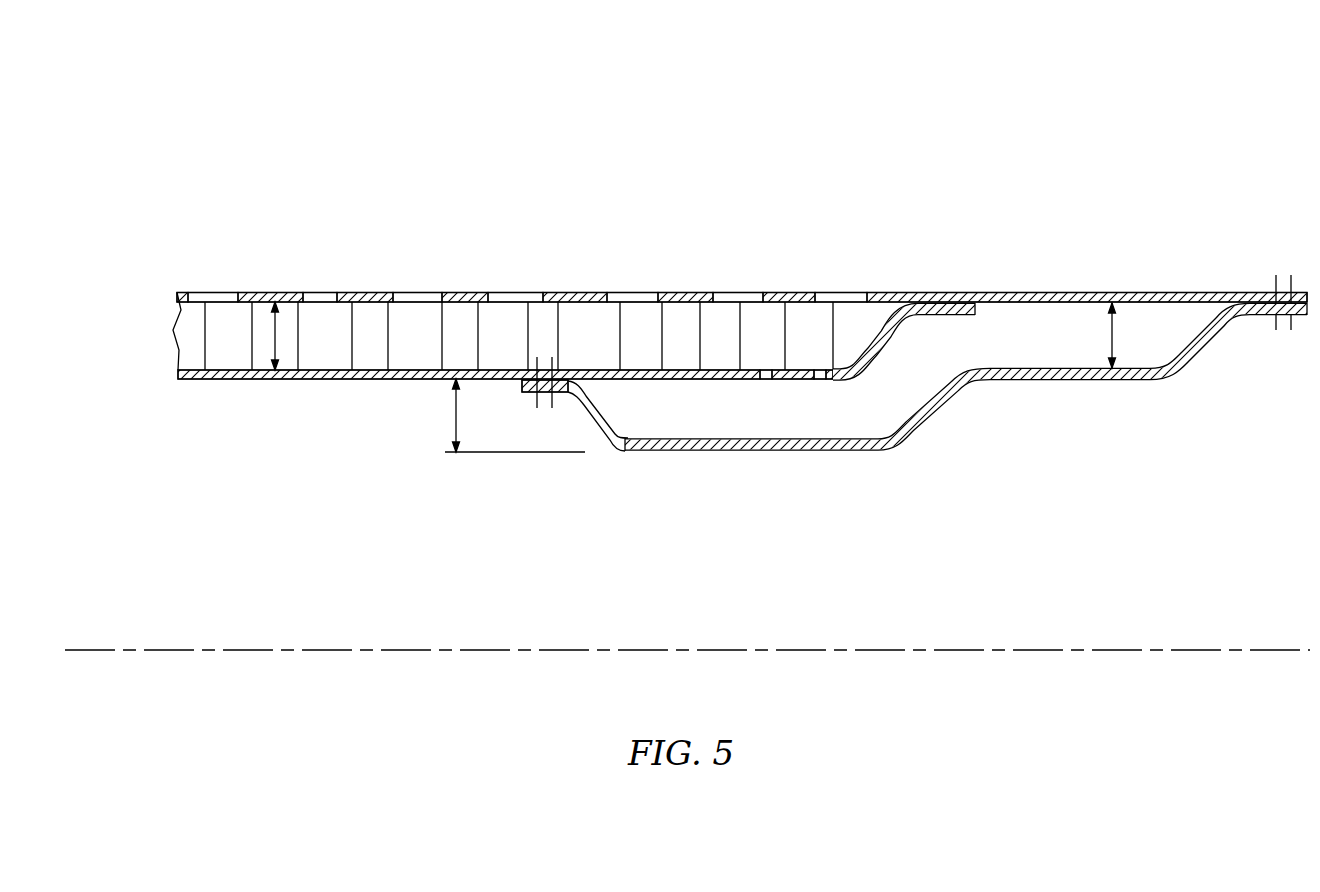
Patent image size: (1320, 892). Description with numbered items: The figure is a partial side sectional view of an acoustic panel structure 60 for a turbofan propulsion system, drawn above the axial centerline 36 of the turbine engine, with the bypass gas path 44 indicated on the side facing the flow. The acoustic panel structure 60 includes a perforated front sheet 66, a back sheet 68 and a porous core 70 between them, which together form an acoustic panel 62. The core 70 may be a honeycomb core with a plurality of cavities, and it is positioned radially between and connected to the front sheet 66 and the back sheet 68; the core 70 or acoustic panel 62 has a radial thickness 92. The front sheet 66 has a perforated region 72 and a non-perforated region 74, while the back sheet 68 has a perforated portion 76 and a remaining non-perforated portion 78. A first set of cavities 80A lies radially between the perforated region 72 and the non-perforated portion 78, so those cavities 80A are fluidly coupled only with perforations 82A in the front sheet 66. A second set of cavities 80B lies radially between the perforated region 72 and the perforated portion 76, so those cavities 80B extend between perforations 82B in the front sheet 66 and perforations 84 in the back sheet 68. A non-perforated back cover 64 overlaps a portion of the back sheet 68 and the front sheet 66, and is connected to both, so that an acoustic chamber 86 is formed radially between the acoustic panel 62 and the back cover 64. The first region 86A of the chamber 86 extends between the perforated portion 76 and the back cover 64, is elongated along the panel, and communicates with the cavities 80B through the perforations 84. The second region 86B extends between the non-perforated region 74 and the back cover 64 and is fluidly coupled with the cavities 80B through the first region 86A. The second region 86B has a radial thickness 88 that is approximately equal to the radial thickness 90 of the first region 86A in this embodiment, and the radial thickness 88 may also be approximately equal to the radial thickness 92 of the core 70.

The axial centerline 36 is at (1283, 652).
The bypass gas path 44 is at (731, 130).
The acoustic panel structure 60 is at (367, 135).
The acoustic panel 62 is at (165, 390).
The back cover 64 is at (920, 402).
The perforated front sheet 66 is at (803, 282).
The back sheet 68 is at (360, 380).
The porous core 70 is at (155, 338).
The perforated region 72 is at (650, 262).
The non-perforated region 74 is at (1035, 277).
The perforated portion of the back sheet 76 is at (727, 400).
The non-perforated portion of the back sheet 78 is at (229, 393).
The first set of cavities 80A is at (412, 330).
The second set of cavities 80B is at (583, 330).
The perforations in the front sheet 82A is at (222, 298).
The perforations in the front sheet 82B is at (630, 300).
The perforations in the back sheet 84 is at (765, 380).
The acoustic chamber 86 is at (908, 404).
The first region of the chamber 86A is at (627, 410).
The second region of the chamber 86B is at (1030, 340).
The radial thickness 88 is at (1112, 340).
The radial thickness 90 is at (456, 420).
The radial thickness 92 is at (277, 372).